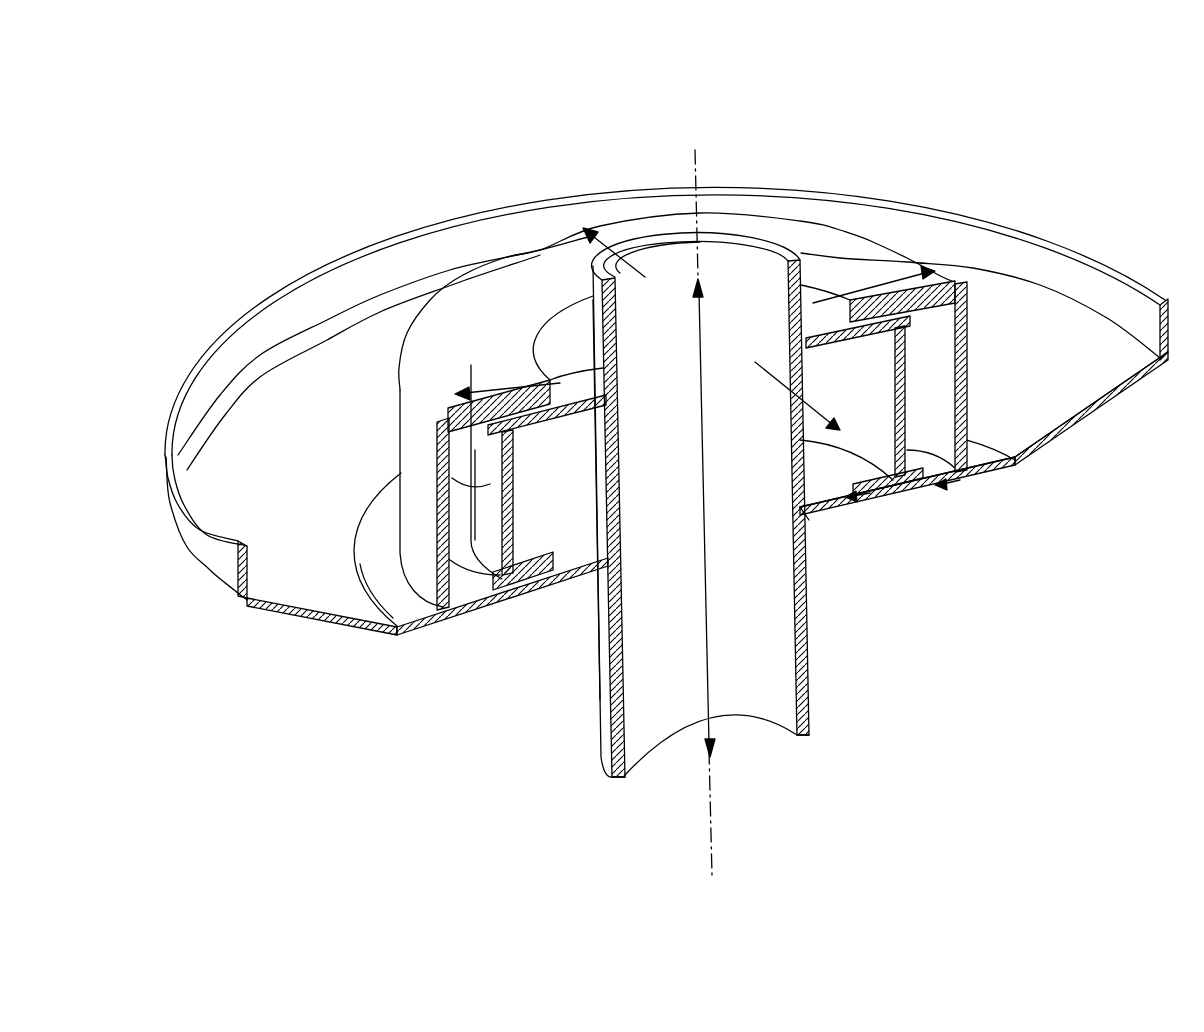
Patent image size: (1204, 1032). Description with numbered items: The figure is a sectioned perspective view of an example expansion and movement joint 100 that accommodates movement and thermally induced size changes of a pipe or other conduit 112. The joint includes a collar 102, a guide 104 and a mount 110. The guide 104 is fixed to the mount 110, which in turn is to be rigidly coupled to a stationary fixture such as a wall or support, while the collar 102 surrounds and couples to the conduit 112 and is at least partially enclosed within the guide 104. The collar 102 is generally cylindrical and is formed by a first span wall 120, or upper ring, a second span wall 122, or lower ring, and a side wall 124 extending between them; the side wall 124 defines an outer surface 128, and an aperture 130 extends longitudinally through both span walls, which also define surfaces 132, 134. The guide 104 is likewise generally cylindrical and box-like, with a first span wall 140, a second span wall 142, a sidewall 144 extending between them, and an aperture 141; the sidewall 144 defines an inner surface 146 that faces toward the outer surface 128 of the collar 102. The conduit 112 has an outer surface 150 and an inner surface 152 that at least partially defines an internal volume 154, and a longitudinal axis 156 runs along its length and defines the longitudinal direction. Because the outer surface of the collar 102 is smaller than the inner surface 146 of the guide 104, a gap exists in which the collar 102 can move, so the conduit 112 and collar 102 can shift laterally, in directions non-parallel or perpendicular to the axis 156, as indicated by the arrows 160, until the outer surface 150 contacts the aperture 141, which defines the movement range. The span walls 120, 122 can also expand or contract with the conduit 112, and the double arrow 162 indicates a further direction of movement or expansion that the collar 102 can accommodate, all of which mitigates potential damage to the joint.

The expansion and movement joint 100 is at (990, 48).
The collar 102 is at (866, 506).
The guide 104 is at (947, 484).
The mount 110 is at (1060, 365).
The conduit 112 is at (812, 685).
The first span wall 120 is at (480, 378).
The second span wall 122 is at (557, 550).
The side wall 124 is at (503, 493).
The outer surface 128 is at (487, 483).
The aperture 130 is at (528, 345).
The surface 132 is at (846, 298).
The surface 134 is at (813, 517).
The first span wall 140 is at (563, 267).
The aperture 141 is at (820, 322).
The second span wall 142 is at (985, 478).
The sidewall 144 is at (967, 328).
The inner surface 146 is at (940, 330).
The outer surface 150 is at (603, 690).
The inner surface 152 is at (727, 255).
The internal volume 154 is at (678, 518).
The longitudinal axis 156 is at (713, 808).
The arrows 160 is at (598, 245).
The double arrow 162 is at (703, 690).